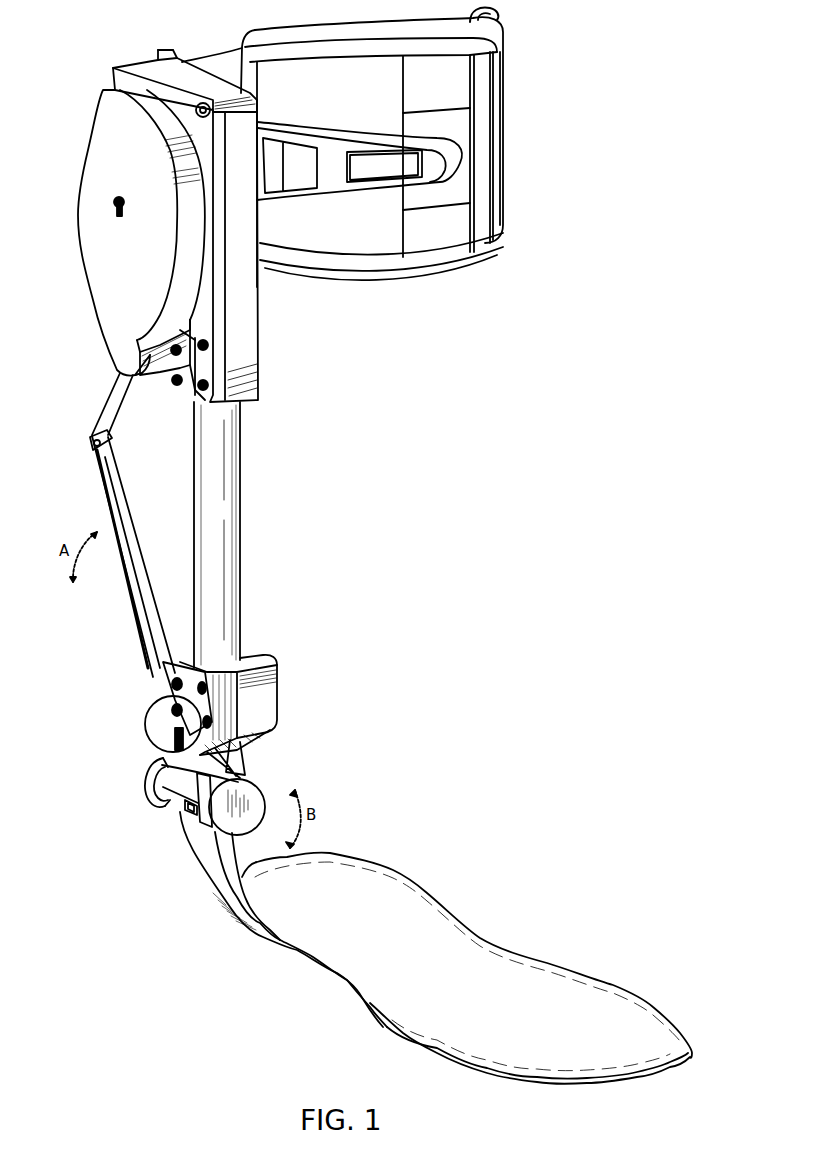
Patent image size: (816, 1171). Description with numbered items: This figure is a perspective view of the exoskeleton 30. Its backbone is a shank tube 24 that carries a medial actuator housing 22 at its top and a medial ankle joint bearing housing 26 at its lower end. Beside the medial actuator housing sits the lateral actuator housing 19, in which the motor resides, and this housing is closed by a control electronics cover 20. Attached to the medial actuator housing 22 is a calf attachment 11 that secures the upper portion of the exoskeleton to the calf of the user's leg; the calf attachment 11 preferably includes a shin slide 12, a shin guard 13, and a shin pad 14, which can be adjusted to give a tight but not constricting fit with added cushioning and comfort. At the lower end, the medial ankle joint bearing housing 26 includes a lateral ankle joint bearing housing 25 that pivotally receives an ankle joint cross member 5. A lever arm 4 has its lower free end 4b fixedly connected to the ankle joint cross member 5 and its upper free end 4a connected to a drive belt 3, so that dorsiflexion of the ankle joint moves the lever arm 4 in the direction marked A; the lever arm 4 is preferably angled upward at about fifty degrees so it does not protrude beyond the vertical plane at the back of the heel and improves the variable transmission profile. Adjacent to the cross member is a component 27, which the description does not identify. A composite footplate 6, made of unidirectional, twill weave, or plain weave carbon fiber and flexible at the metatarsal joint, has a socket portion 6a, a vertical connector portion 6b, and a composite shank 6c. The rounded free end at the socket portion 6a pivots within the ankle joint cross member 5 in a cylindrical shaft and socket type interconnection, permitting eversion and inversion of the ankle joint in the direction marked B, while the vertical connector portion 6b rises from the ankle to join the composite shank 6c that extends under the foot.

The exoskeleton 30 is at (362, 521).
The lateral actuator housing 19 is at (128, 72).
The control electronics cover 20 is at (95, 158).
The shin pad 14 is at (497, 44).
The shin slide 12 is at (460, 130).
The shin guard 13 is at (493, 182).
The calf attachment 11 is at (440, 173).
The medial actuator housing 22 is at (247, 303).
The shank tube 24 is at (225, 453).
The drive belt 3 is at (110, 410).
The lever arm 4 is at (103, 506).
The upper free end of lever arm 4a is at (93, 445).
The lower free end of lever arm 4b is at (158, 680).
The medial ankle joint bearing housing 26 is at (268, 692).
The lateral ankle joint bearing housing 25 is at (157, 723).
The ankle joint cross member 5 is at (150, 773).
The socket portion 6a is at (185, 803).
The ankle wheel 27 is at (245, 795).
The composite footplate 6 is at (414, 948).
The vertical connector portion 6b is at (190, 847).
The composite shank 6c is at (622, 998).